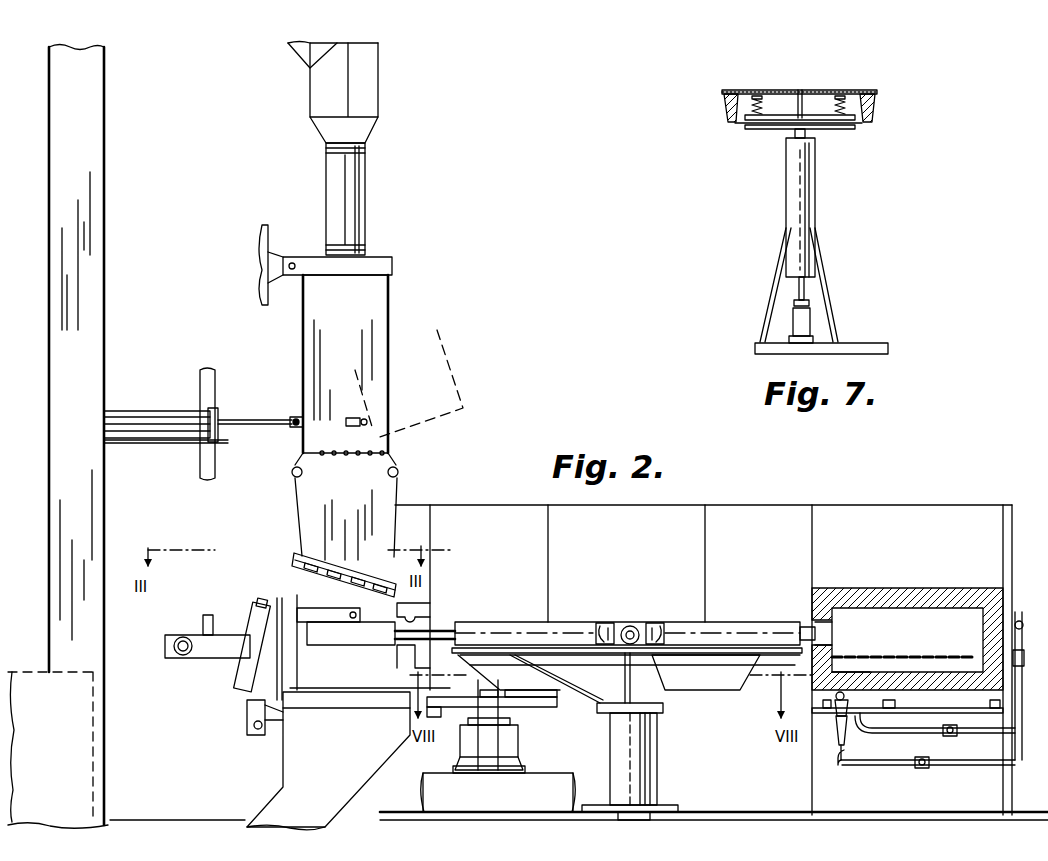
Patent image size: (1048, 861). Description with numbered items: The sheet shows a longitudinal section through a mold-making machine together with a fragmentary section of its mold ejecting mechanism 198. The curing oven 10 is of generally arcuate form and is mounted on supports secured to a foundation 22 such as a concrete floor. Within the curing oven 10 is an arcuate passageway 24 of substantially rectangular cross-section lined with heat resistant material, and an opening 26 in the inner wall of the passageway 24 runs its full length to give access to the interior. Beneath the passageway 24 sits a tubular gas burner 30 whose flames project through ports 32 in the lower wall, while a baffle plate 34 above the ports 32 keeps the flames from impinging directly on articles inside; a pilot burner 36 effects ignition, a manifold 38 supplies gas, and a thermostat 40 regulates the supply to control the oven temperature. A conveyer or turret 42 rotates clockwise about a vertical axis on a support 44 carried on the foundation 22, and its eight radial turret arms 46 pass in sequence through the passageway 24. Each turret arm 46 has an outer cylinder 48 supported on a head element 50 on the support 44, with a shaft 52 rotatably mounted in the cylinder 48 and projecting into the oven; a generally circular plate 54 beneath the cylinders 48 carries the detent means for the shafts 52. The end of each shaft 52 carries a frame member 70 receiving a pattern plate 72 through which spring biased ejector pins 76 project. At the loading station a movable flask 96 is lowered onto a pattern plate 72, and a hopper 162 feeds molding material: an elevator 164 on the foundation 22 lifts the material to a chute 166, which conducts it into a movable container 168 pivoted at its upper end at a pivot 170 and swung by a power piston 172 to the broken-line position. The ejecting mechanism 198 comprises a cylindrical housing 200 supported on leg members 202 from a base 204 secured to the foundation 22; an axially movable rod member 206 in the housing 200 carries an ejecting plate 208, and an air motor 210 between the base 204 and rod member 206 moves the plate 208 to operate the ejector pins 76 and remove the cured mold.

In FIG. 2, the curing oven 10 is at (774, 518).
In FIG. 2, the foundation 22 is at (727, 814).
In FIG. 2, the arcuate passageway 24 is at (420, 613).
In FIG. 2, the opening 26 is at (830, 625).
In FIG. 2, the gas burner 30 is at (845, 697).
In FIG. 2, the port 32 is at (845, 669).
In FIG. 2, the baffle plate 34 is at (937, 656).
In FIG. 2, the pilot burner 36 is at (849, 724).
In FIG. 2, the manifold 38 is at (1027, 614).
In FIG. 2, the thermostat 40 is at (1027, 650).
In FIG. 2, the conveyer or turret 42 is at (633, 622).
In FIG. 2, the support 44 is at (641, 747).
In FIG. 2, the turret arm 46 is at (522, 625).
In FIG. 2, the outer cylinder 48 is at (480, 625).
In FIG. 2, the head element 50 is at (649, 625).
In FIG. 2, the shaft 52 is at (445, 632).
In FIG. 2, the circular plate 54 is at (541, 650).
In FIG. 2, the frame member 70 is at (352, 645).
In FIG. 7, the frame member 70 is at (878, 105).
In FIG. 7, the pattern plate 72 is at (804, 92).
In FIG. 2, the spring biased pin 76 is at (392, 645).
In FIG. 7, the spring biased pin 76 is at (761, 100).
In FIG. 2, the flask 96 is at (312, 590).
In FIG. 2, the hopper 162 is at (300, 396).
In FIG. 2, the elevator 164 is at (104, 228).
In FIG. 2, the chute 166 is at (362, 168).
In FIG. 2, the movable container 168 is at (310, 337).
In FIG. 2, the pivot 170 is at (299, 254).
In FIG. 2, the power piston 172 is at (139, 420).
In FIG. 7, the mold ejecting mechanism 198 is at (822, 204).
In FIG. 7, the cylindrical housing 200 is at (820, 163).
In FIG. 7, the leg member 202 is at (774, 313).
In FIG. 7, the base 204 is at (864, 345).
In FIG. 7, the rod member 206 is at (806, 283).
In FIG. 7, the ejecting plate 208 is at (858, 127).
In FIG. 7, the air motor 210 is at (796, 323).